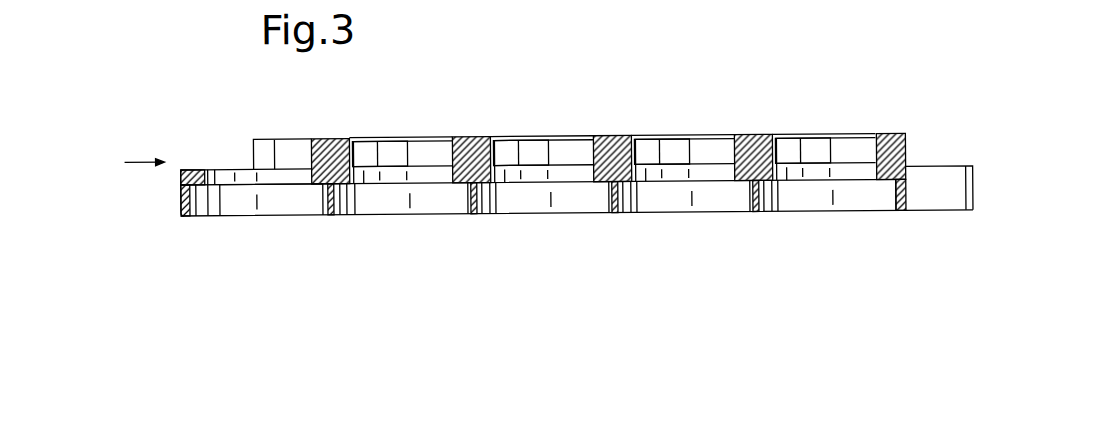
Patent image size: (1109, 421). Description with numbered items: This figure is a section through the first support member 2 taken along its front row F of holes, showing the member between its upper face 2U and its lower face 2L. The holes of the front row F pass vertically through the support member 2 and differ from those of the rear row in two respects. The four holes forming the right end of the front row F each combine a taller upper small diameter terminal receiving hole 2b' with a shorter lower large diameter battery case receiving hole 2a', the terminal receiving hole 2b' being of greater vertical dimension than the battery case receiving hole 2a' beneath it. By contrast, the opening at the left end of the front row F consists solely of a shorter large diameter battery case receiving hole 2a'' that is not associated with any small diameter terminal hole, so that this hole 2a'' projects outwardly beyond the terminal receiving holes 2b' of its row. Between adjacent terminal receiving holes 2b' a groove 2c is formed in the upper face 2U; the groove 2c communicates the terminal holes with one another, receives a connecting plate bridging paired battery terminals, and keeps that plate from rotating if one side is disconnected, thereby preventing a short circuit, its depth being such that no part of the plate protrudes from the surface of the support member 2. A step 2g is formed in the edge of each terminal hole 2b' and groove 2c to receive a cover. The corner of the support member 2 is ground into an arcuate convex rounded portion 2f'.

The first support member 2 is at (286, 140).
The upper face 2U is at (323, 139).
The lower face 2L is at (197, 217).
The groove 2c is at (388, 140).
The upper small diameter terminal receiving hole 2b' is at (646, 118).
The step 2g is at (572, 142).
The lower large diameter battery case receiving hole 2a' is at (626, 233).
The large diameter battery case receiving hole 2a'' is at (272, 230).
The rounded portion 2f' is at (334, 254).
The front row F is at (133, 158).